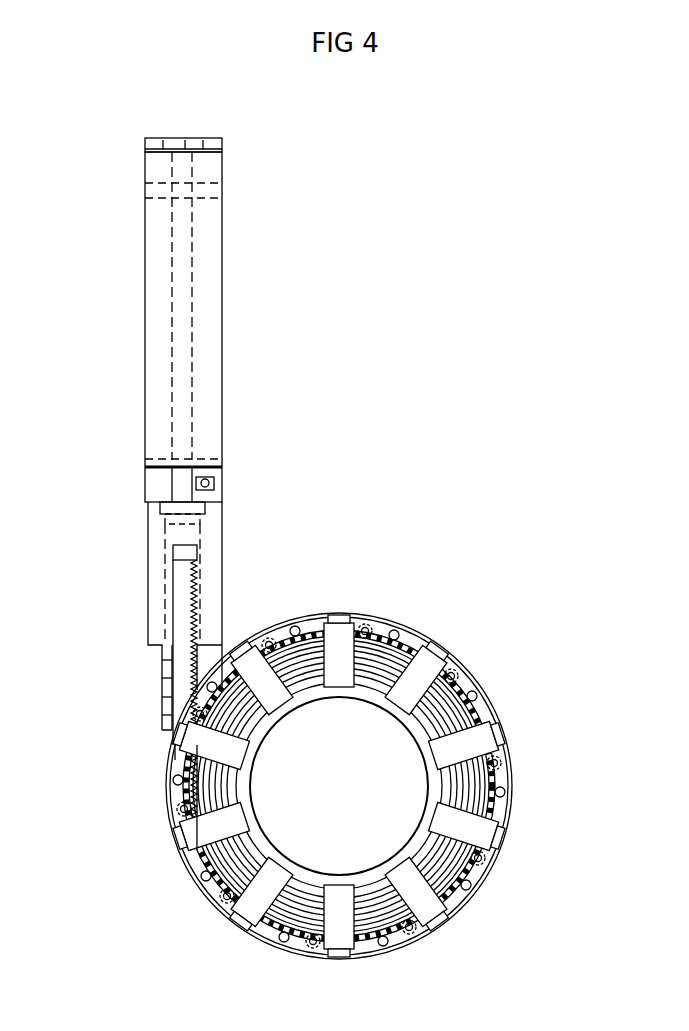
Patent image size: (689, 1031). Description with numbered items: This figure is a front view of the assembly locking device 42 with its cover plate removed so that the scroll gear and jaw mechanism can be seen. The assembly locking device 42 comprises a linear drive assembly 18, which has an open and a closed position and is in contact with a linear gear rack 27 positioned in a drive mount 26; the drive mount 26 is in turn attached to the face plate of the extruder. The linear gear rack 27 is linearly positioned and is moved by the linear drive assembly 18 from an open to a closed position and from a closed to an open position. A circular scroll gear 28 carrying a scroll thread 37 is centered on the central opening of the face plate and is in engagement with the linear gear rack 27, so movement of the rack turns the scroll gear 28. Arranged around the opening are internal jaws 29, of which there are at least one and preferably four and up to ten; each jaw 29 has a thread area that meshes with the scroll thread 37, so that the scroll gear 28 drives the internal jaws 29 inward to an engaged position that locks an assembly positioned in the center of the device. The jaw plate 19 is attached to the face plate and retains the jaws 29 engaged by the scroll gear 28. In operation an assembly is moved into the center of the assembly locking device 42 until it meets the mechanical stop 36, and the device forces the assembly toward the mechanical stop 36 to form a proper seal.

The assembly locking device 42 is at (250, 181).
The linear drive assembly 18 is at (223, 278).
The drive mount 26 is at (152, 631).
The linear gear rack 27 is at (187, 583).
The jaw plate 19 is at (390, 627).
The scroll gear 28 is at (342, 715).
The mechanical stop 36 is at (415, 720).
The internal jaw 29 is at (338, 637).
The scroll thread 37 is at (210, 797).